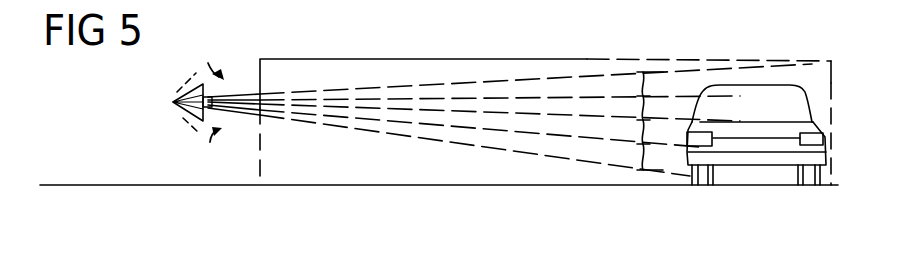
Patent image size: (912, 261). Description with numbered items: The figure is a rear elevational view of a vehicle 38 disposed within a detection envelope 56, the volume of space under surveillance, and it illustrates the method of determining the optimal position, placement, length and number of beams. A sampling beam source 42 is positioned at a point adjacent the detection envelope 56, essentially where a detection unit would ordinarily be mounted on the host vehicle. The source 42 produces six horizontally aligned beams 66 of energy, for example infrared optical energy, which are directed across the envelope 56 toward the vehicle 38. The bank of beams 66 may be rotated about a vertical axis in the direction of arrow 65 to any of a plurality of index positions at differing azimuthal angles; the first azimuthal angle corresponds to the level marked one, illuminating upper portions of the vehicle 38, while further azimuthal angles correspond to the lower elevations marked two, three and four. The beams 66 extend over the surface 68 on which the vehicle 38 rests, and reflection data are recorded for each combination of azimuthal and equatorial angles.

The adjacent vehicle 38 is at (770, 143).
The sampling beam source 42 is at (173, 101).
The detection envelope 56 is at (523, 59).
The arrow 65 is at (222, 78).
The beams 66 is at (602, 86).
The road surface 68 is at (447, 175).